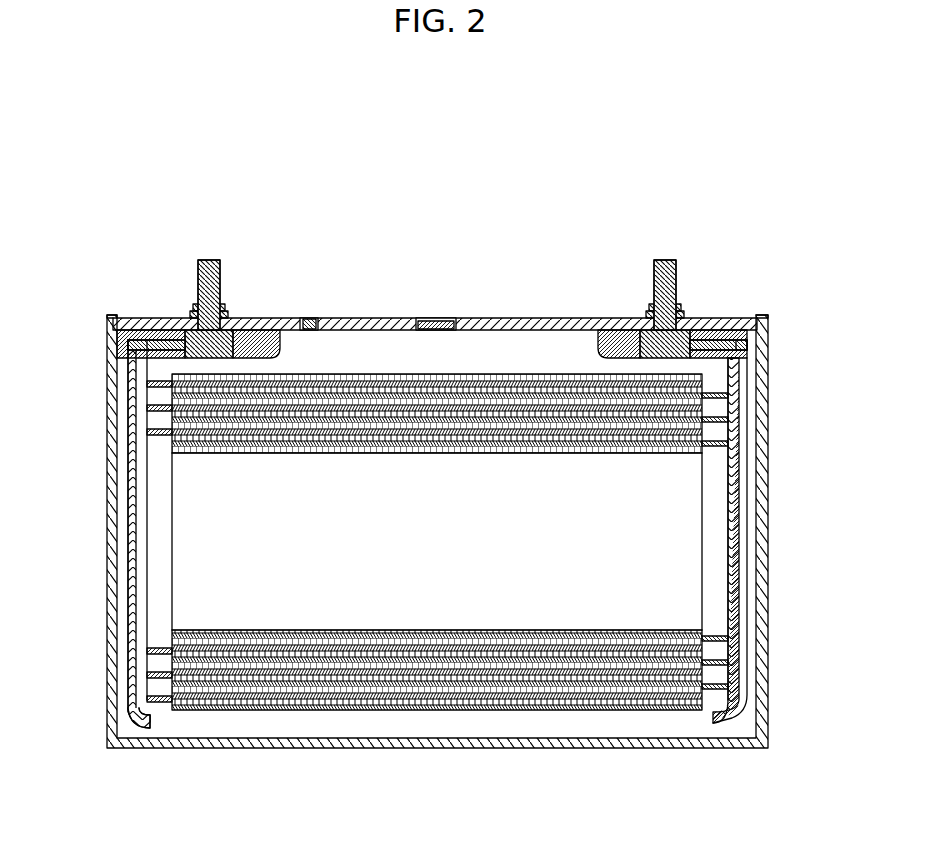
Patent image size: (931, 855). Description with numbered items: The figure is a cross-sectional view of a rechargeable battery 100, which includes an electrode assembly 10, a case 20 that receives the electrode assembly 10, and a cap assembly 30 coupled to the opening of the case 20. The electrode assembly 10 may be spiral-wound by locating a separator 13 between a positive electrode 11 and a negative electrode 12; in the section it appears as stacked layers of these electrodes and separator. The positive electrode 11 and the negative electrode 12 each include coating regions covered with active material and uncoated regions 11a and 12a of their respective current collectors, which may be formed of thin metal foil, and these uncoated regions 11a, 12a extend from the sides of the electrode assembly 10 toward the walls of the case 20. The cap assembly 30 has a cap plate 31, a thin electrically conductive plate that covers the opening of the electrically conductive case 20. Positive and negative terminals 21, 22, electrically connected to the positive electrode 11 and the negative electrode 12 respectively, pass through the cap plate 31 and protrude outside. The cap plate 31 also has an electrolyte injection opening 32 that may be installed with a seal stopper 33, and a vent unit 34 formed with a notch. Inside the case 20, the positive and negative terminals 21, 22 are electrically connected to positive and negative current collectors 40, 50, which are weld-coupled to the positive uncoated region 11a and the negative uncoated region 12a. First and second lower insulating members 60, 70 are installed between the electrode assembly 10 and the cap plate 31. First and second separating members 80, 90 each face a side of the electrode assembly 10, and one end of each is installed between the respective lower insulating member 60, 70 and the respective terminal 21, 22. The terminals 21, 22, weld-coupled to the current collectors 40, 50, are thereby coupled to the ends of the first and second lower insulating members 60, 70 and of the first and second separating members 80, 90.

The rechargeable battery 100 is at (413, 143).
The electrode assembly 10 is at (437, 579).
The positive electrode 11 is at (278, 702).
The positive uncoated region 11a is at (162, 704).
The negative electrode 12 is at (345, 692).
The negative uncoated region 12a is at (712, 690).
The separator 13 is at (393, 704).
The case 20 is at (761, 472).
The positive terminal 21 is at (207, 260).
The negative terminal 22 is at (663, 260).
The cap assembly 30 is at (437, 280).
The cap plate 31 is at (505, 320).
The electrolyte injection opening 32 is at (318, 331).
The seal stopper 33 is at (308, 319).
The vent unit 34 is at (425, 320).
The positive current collector 40 is at (147, 513).
The negative current collector 50 is at (736, 530).
The first lower insulating member 60 is at (128, 345).
The second lower insulating member 70 is at (748, 341).
The first separating member 80 is at (129, 441).
The second separating member 90 is at (742, 408).